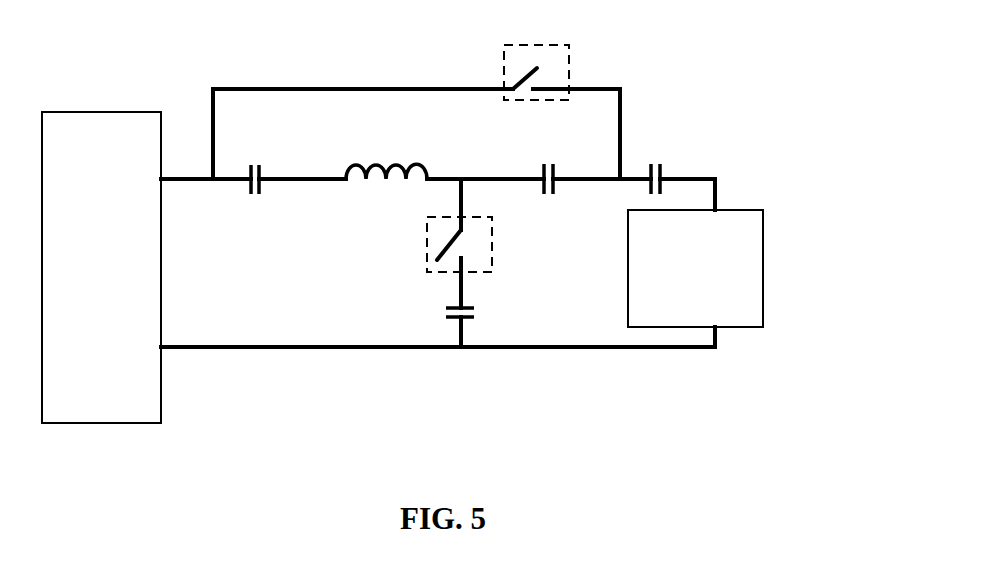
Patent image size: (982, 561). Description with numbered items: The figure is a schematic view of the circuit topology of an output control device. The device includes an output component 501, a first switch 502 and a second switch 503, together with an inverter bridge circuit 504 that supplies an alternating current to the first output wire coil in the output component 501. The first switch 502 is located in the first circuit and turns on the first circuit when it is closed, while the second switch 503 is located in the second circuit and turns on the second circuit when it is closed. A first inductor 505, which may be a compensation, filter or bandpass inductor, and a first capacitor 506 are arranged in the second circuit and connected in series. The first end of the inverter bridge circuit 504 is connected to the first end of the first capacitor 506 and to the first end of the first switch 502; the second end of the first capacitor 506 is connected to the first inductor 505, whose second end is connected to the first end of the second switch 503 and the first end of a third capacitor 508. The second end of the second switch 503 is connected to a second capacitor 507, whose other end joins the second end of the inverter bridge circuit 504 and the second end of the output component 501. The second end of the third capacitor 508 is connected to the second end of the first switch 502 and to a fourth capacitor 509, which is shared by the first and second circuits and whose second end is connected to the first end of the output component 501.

The output component 501 is at (763, 210).
The first switch 502 is at (537, 43).
The second switch 503 is at (492, 255).
The inverter bridge circuit 504 is at (100, 111).
The first inductor 505 is at (400, 164).
The first capacitor 506 is at (260, 163).
The second capacitor 507 is at (472, 308).
The third capacitor 508 is at (554, 163).
The fourth capacitor 509 is at (660, 163).